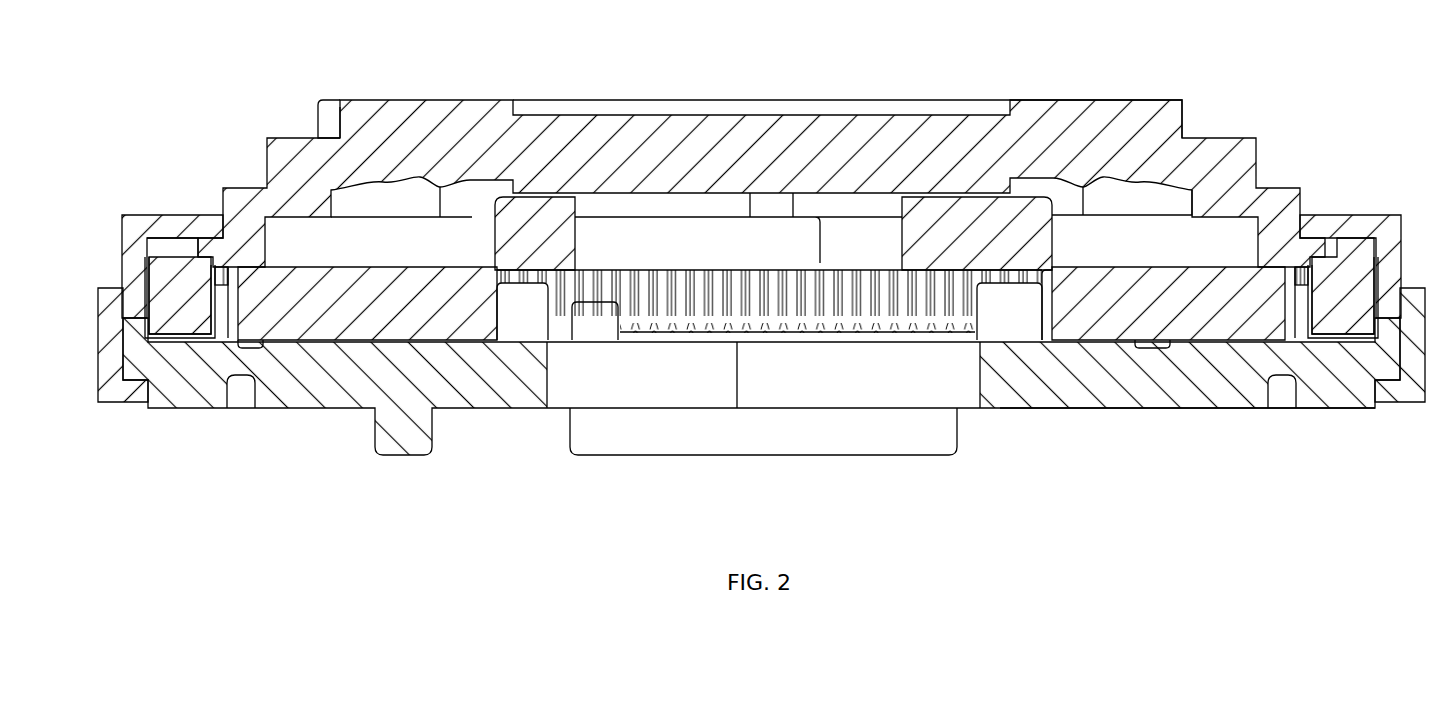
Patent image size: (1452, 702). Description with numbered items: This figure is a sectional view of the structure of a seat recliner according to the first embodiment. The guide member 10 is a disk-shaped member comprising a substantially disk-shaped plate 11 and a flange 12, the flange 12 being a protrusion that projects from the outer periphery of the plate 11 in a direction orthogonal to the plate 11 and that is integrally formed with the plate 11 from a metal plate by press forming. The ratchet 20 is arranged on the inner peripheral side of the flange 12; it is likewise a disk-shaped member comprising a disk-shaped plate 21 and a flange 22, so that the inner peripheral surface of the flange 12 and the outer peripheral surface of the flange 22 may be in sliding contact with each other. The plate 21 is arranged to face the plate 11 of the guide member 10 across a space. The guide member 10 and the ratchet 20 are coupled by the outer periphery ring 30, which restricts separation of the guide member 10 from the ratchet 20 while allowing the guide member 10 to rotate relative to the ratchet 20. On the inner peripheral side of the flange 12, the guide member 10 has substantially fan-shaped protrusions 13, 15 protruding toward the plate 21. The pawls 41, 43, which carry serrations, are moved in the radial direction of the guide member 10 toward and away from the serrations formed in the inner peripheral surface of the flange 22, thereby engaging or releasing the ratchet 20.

The guide member 10 is at (307, 410).
The plate 11 is at (1095, 410).
The flange 12 is at (138, 320).
The protrusion 13 is at (520, 318).
The protrusion 15 is at (1012, 318).
The ratchet 20 is at (357, 98).
The plate 21 is at (1148, 98).
The flange 22 is at (173, 270).
The outer periphery ring 30 is at (148, 213).
The pawl 41 is at (312, 292).
The pawl 43 is at (1207, 292).